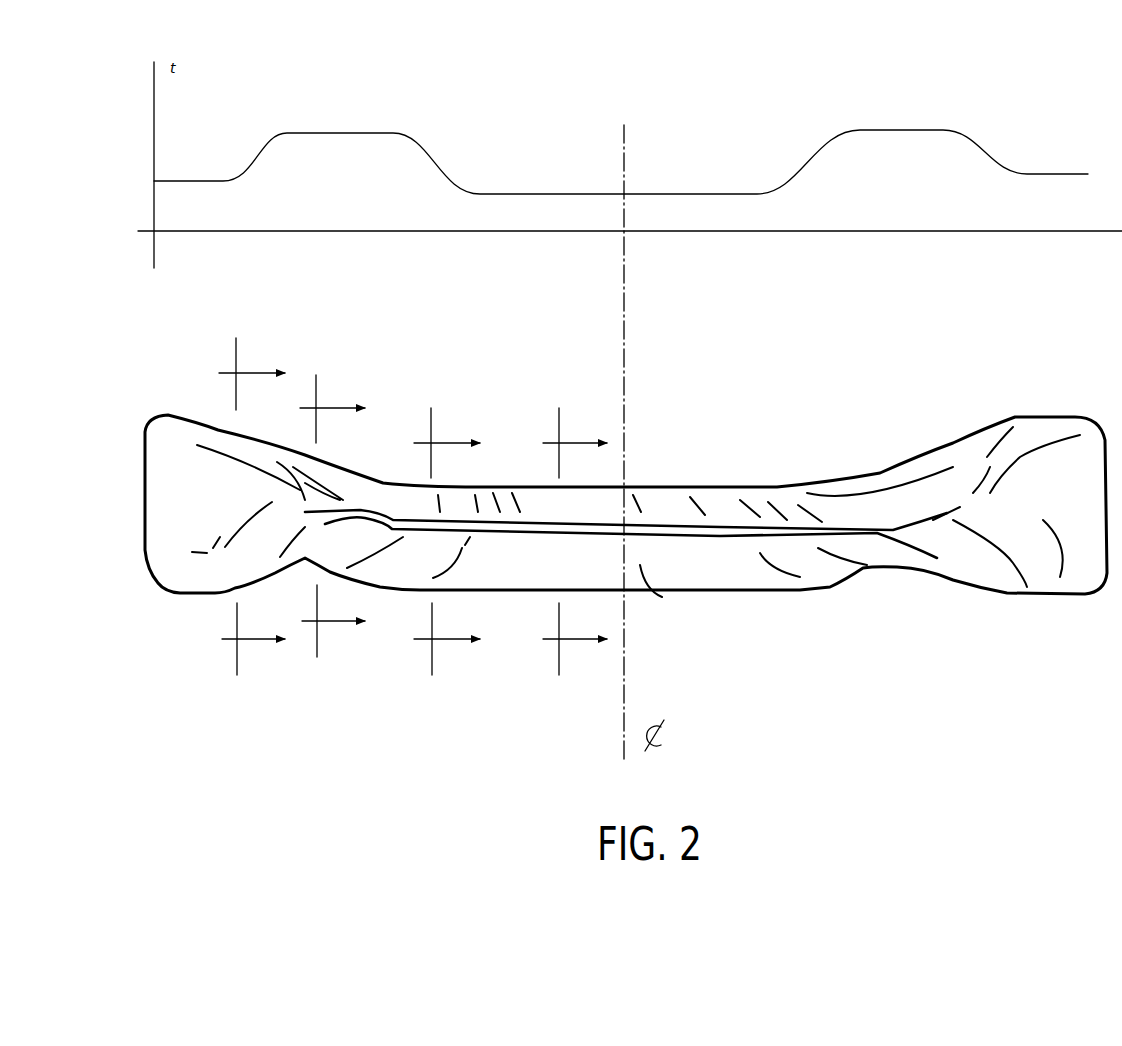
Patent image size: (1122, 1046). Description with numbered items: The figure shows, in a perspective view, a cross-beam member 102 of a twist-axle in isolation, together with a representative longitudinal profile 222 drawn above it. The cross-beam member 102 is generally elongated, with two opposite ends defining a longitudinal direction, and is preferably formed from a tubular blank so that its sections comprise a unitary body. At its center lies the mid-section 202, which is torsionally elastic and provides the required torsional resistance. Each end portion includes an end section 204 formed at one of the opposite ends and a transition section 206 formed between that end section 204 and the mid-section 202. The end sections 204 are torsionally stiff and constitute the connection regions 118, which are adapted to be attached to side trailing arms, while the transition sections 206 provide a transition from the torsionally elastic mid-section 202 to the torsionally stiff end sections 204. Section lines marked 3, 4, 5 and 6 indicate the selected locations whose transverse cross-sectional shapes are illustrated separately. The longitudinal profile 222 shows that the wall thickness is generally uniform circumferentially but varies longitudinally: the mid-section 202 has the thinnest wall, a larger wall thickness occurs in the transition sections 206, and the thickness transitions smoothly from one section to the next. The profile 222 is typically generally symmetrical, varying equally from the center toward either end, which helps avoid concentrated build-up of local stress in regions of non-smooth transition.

The cross-beam member 102 is at (741, 436).
The connection regions 118 is at (1043, 438).
The mid-section 202 is at (648, 565).
The end section 204 is at (218, 533).
The transition section 206 is at (367, 550).
The longitudinal profile 222 is at (483, 139).
The section line of FIG. 3 is at (575, 538).
The section line of FIG. 4 is at (447, 538).
The section line of FIG. 5 is at (332, 512).
The section line of FIG. 6 is at (252, 503).